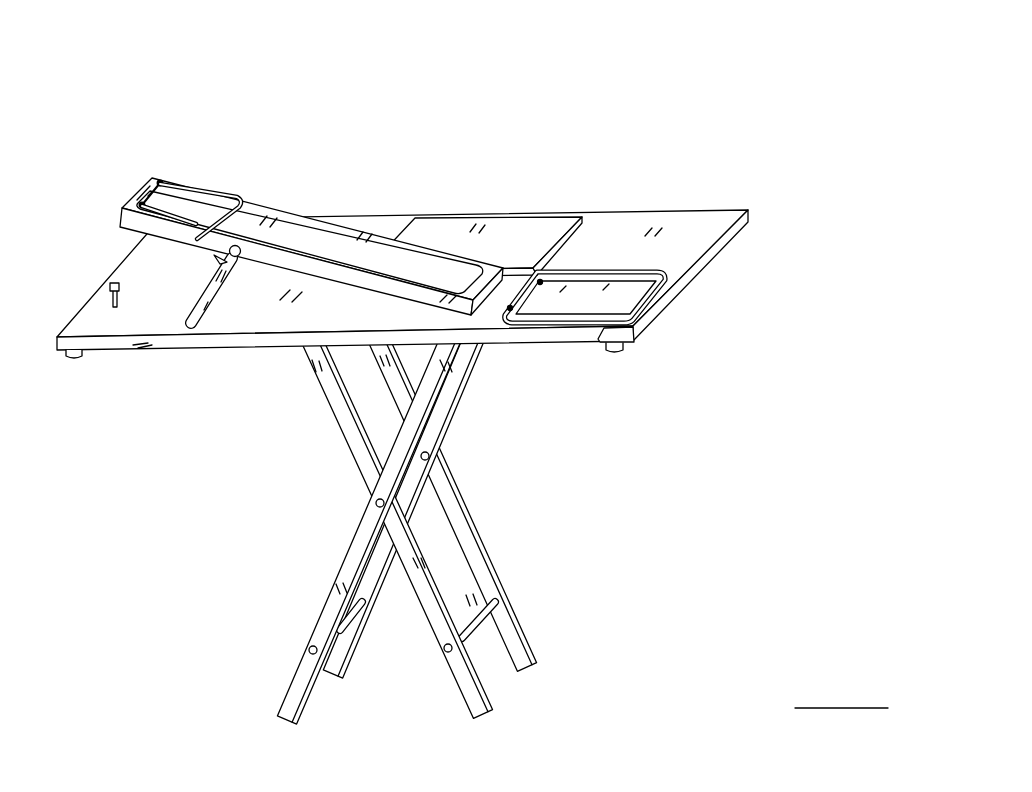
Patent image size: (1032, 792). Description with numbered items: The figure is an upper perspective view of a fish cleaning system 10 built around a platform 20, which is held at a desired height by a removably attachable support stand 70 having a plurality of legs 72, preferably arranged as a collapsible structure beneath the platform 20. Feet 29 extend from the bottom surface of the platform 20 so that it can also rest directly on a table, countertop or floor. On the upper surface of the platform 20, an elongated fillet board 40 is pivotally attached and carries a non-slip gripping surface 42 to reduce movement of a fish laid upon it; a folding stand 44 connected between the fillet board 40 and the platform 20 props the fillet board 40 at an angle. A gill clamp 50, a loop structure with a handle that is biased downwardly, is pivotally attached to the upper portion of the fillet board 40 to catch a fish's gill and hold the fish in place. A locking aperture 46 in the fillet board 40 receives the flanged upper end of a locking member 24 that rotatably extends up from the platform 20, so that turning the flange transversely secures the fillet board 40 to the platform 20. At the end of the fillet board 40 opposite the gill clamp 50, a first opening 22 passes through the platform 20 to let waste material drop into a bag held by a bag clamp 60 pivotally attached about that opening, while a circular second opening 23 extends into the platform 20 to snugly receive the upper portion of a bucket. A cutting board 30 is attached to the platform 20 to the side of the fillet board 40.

The fish cleaning system 10 is at (812, 69).
The platform 20 is at (685, 220).
The first opening 22 is at (670, 283).
The second opening 23 is at (258, 262).
The locking member 24 is at (110, 285).
The feet 29 is at (73, 357).
The cutting board 30 is at (512, 225).
The fillet board 40 is at (298, 209).
The gripping surface 42 is at (343, 238).
The folding stand 44 is at (210, 285).
The locking aperture 46 is at (142, 197).
The gill clamp 50 is at (197, 186).
The bag clamp 60 is at (643, 327).
The support stand 70 is at (492, 690).
The legs 72 is at (355, 560).